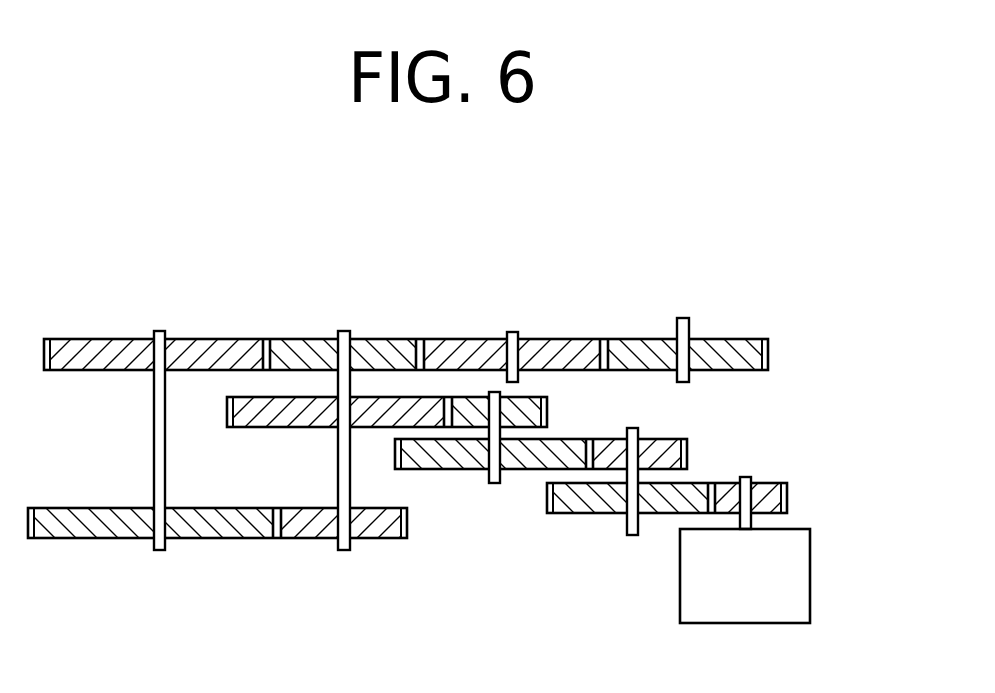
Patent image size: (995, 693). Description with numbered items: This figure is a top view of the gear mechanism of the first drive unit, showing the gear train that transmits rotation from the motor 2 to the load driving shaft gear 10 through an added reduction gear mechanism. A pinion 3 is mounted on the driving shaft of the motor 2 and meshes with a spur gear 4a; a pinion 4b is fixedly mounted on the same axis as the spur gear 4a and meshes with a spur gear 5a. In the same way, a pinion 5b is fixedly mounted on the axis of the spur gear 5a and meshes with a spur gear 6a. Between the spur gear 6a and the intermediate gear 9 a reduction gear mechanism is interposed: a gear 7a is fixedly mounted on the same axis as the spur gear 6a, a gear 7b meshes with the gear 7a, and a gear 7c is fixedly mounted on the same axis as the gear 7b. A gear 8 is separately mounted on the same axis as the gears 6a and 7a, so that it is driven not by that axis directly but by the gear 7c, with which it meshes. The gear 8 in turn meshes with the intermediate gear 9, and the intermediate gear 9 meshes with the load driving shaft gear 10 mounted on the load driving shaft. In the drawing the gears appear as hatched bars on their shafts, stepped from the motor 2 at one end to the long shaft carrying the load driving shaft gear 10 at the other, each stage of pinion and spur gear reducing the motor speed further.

The motor 2 is at (798, 558).
The pinion 3 is at (772, 483).
The spur gear 4a is at (597, 515).
The pinion 4b is at (663, 440).
The spur gear 5a is at (473, 470).
The pinion 5b is at (547, 405).
The spur gear 6a is at (290, 427).
The gear 7a is at (315, 540).
The gear 7b is at (102, 530).
The gear 7c is at (108, 338).
The gear 8 is at (290, 338).
The intermediate gear 9 is at (470, 338).
The load driving shaft gear 10 is at (635, 338).